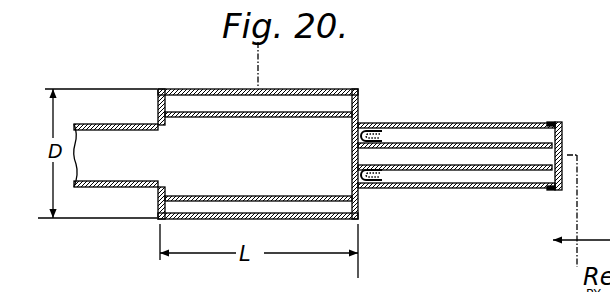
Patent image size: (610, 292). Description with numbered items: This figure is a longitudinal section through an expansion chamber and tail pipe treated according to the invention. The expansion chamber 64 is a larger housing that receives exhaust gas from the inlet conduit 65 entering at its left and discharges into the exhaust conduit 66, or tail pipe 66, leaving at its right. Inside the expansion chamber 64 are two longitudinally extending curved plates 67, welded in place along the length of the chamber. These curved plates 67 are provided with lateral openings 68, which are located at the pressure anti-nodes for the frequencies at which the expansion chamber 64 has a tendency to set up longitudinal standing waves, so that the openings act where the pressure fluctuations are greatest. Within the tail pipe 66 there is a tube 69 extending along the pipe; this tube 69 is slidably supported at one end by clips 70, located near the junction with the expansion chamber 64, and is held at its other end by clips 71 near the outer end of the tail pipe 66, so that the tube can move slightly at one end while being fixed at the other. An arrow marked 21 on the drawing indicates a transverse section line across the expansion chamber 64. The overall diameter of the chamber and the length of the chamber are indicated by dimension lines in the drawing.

The section line indicating view of FIG. 21 is at (240, 72).
The expansion chamber 64 is at (192, 221).
The inlet conduit 65 is at (112, 186).
The exhaust conduit 66 is at (417, 125).
The curved plates 67 is at (190, 112).
The lateral openings 68 is at (332, 113).
The tube 69 is at (470, 147).
The clips 70 is at (369, 133).
The clips 71 is at (576, 108).